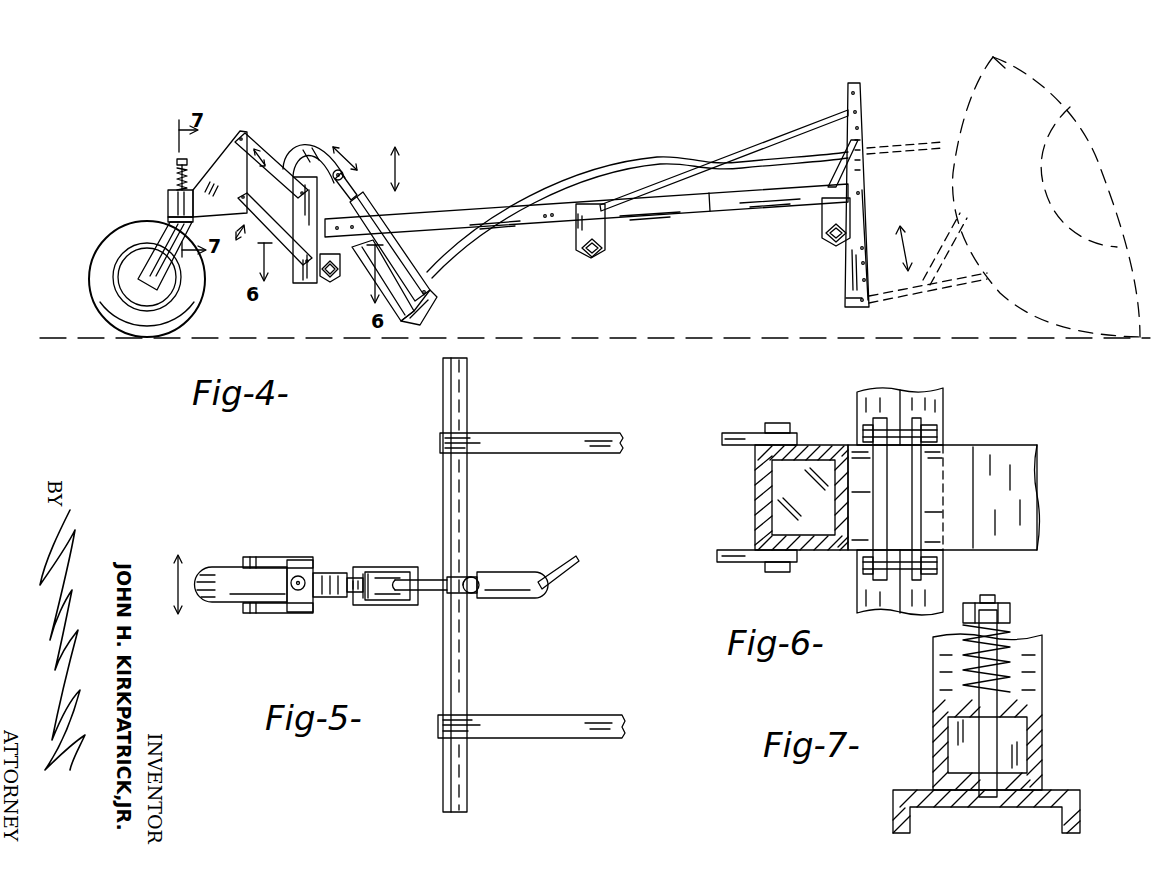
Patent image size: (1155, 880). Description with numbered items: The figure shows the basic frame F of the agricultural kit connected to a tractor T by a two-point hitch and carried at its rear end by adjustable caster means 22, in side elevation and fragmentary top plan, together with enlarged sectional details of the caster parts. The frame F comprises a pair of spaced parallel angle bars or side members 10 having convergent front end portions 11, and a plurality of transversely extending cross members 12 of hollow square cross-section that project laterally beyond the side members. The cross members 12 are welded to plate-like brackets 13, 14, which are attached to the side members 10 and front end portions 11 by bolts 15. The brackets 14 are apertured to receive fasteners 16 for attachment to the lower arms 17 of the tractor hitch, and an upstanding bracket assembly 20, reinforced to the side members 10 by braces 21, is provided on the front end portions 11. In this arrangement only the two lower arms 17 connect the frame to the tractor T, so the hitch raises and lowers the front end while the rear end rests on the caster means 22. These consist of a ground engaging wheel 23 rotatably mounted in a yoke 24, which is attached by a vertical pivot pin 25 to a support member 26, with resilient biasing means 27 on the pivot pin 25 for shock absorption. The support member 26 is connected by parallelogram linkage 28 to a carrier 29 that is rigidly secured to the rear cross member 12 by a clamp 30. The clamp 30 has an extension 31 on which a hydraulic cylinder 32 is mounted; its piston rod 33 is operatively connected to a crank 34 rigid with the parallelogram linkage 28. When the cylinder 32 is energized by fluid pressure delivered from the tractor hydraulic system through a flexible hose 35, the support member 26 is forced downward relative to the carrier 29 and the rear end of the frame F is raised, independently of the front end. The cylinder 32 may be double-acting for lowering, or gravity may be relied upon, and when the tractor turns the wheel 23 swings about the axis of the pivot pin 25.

In FIG. 4, the side members 10 is at (540, 224).
In FIG. 5, the side members 10 is at (566, 447).
In FIG. 4, the convergent front end portions 11 is at (738, 212).
In FIG. 4, the cross members 12 is at (330, 278).
In FIG. 5, the cross members 12 is at (463, 516).
In FIG. 6, the cross members 12 is at (940, 405).
In FIG. 4, the brackets 13 is at (606, 238).
In FIG. 4, the brackets 14 is at (868, 207).
In FIG. 4, the bolts 15 is at (866, 190).
In FIG. 4, the fasteners 16 is at (846, 303).
In FIG. 4, the lower arms 17 is at (905, 298).
In FIG. 4, the upstanding bracket assembly 20 is at (862, 140).
In FIG. 4, the braces 21 is at (803, 136).
In FIG. 4, the adjustable caster means 22 is at (235, 129).
In FIG. 5, the adjustable caster means 22 is at (336, 570).
In FIG. 4, the ground engaging wheel 23 is at (95, 279).
In FIG. 5, the ground engaging wheel 23 is at (226, 582).
In FIG. 4, the yoke 24 is at (165, 243).
In FIG. 5, the yoke 24 is at (270, 557).
In FIG. 7, the yoke 24 is at (1050, 790).
In FIG. 4, the vertical pivot pin 25 is at (177, 162).
In FIG. 5, the vertical pivot pin 25 is at (298, 592).
In FIG. 7, the vertical pivot pin 25 is at (1000, 740).
In FIG. 4, the support member 26 is at (215, 174).
In FIG. 5, the support member 26 is at (332, 600).
In FIG. 7, the support member 26 is at (1040, 700).
In FIG. 4, the resilient biasing means 27 is at (177, 178).
In FIG. 7, the resilient biasing means 27 is at (1010, 660).
In FIG. 4, the parallelogram linkage 28 is at (266, 217).
In FIG. 5, the parallelogram linkage 28 is at (388, 567).
In FIG. 6, the parallelogram linkage 28 is at (738, 447).
In FIG. 4, the carrier 29 is at (298, 287).
In FIG. 5, the carrier 29 is at (400, 605).
In FIG. 6, the carrier 29 is at (830, 552).
In FIG. 4, the clamp 30 is at (361, 270).
In FIG. 6, the clamp 30 is at (948, 462).
In FIG. 4, the extension 31 is at (416, 312).
In FIG. 6, the extension 31 is at (1020, 498).
In FIG. 4, the hydraulic cylinder 32 is at (402, 255).
In FIG. 5, the hydraulic cylinder 32 is at (512, 600).
In FIG. 4, the piston rod 33 is at (350, 185).
In FIG. 4, the crank 34 is at (300, 150).
In FIG. 5, the crank 34 is at (423, 578).
In FIG. 4, the flexible hose 35 is at (586, 172).
In FIG. 5, the flexible hose 35 is at (568, 566).
In FIG. 4, the frame F is at (466, 208).
In FIG. 5, the frame F is at (548, 432).
In FIG. 4, the tractor T is at (965, 95).